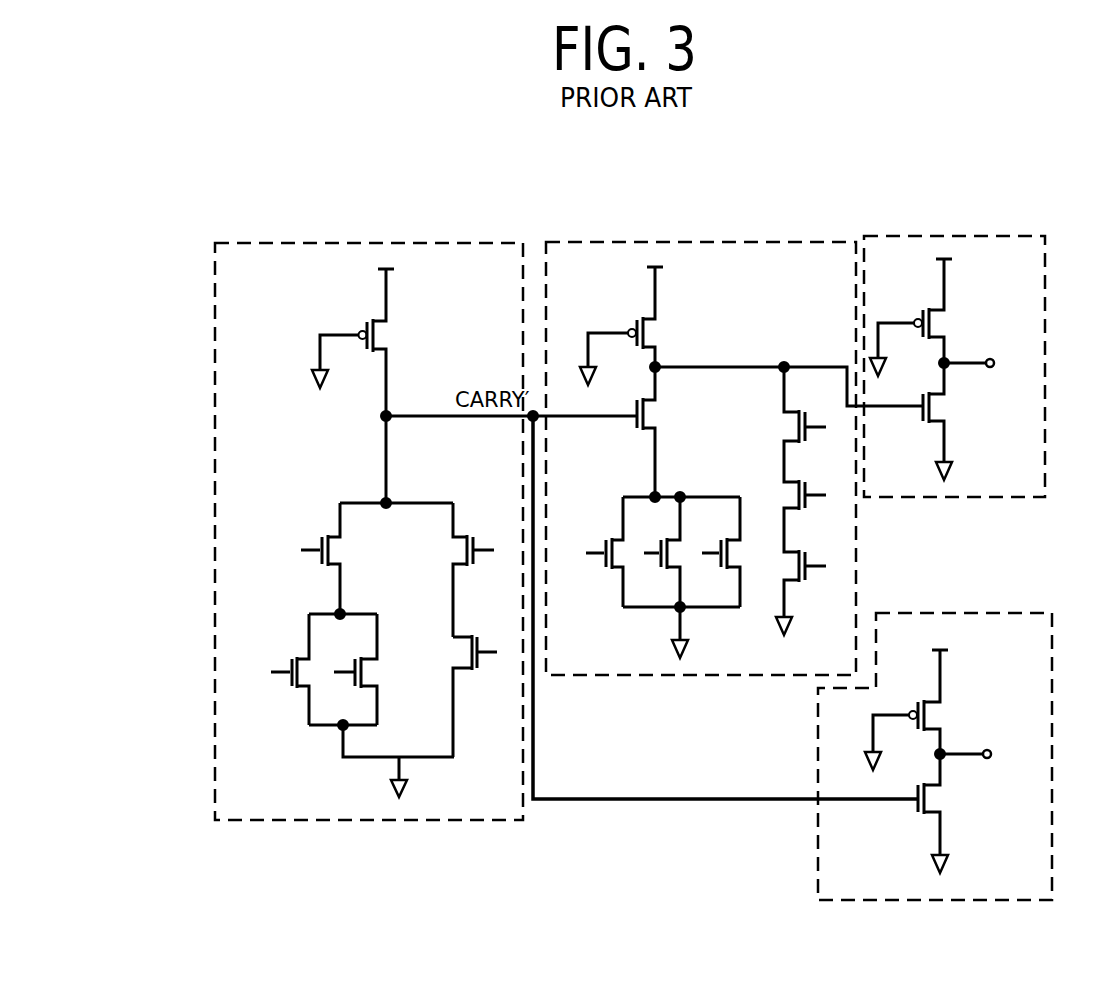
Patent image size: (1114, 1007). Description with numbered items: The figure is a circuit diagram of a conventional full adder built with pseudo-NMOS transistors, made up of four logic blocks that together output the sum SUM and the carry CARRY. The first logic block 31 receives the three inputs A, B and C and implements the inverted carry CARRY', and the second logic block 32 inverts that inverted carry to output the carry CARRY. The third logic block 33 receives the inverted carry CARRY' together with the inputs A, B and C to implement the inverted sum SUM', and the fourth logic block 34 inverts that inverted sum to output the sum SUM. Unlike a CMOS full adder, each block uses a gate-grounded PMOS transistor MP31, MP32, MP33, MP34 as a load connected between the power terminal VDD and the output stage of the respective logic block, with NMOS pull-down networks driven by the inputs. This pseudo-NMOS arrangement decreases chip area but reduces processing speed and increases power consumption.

The first logic block 31 is at (219, 740).
The second logic block 32 is at (1053, 781).
The third logic block 33 is at (750, 242).
The fourth logic block 34 is at (1047, 262).
The gate-grounded PMOS transistor MP31 is at (381, 342).
The gate-grounded PMOS transistor MP32 is at (934, 710).
The gate-grounded PMOS transistor MP33 is at (649, 326).
The gate-grounded PMOS transistor MP34 is at (938, 317).